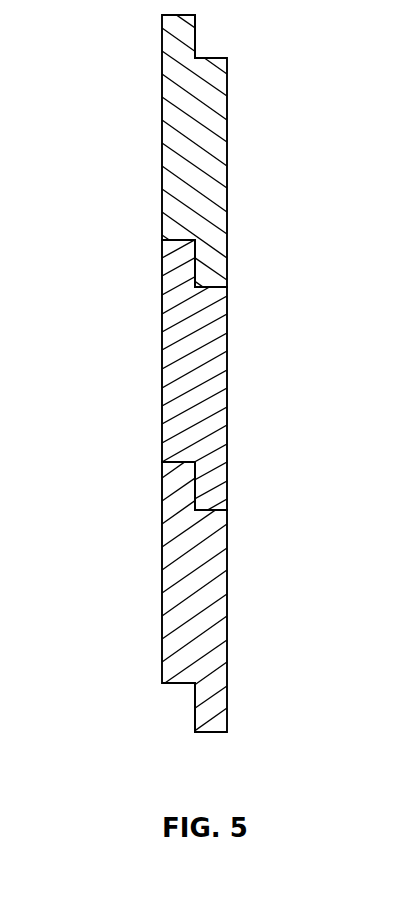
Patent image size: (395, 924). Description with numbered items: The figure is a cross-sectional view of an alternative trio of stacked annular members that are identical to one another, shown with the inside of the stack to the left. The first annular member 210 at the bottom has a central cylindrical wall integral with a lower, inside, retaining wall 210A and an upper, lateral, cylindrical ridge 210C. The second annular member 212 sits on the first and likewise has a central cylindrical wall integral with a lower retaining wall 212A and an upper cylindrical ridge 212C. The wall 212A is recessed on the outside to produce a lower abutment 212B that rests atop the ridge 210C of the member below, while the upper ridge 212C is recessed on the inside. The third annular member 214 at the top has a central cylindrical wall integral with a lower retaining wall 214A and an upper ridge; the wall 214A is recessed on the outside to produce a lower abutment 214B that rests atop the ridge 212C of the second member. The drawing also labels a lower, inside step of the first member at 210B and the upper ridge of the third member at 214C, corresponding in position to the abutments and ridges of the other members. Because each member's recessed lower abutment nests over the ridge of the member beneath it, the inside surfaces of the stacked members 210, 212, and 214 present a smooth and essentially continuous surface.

The first annular member 210 is at (229, 619).
The lower, inside, retaining wall 210A is at (190, 710).
The bottom recess/notch of element 210 210B is at (177, 686).
The upper, lateral, cylindrical ridge 210C is at (228, 467).
The second annular member 212 is at (228, 378).
The lower retaining wall 212A is at (210, 512).
The lower abutment 212B is at (175, 467).
The upper cylindrical ridge 212C is at (228, 257).
The third annular member 214 is at (229, 138).
The lower retaining wall 214A is at (210, 290).
The lower abutment 214B is at (175, 243).
The top projecting portion of element 214 214C is at (199, 38).